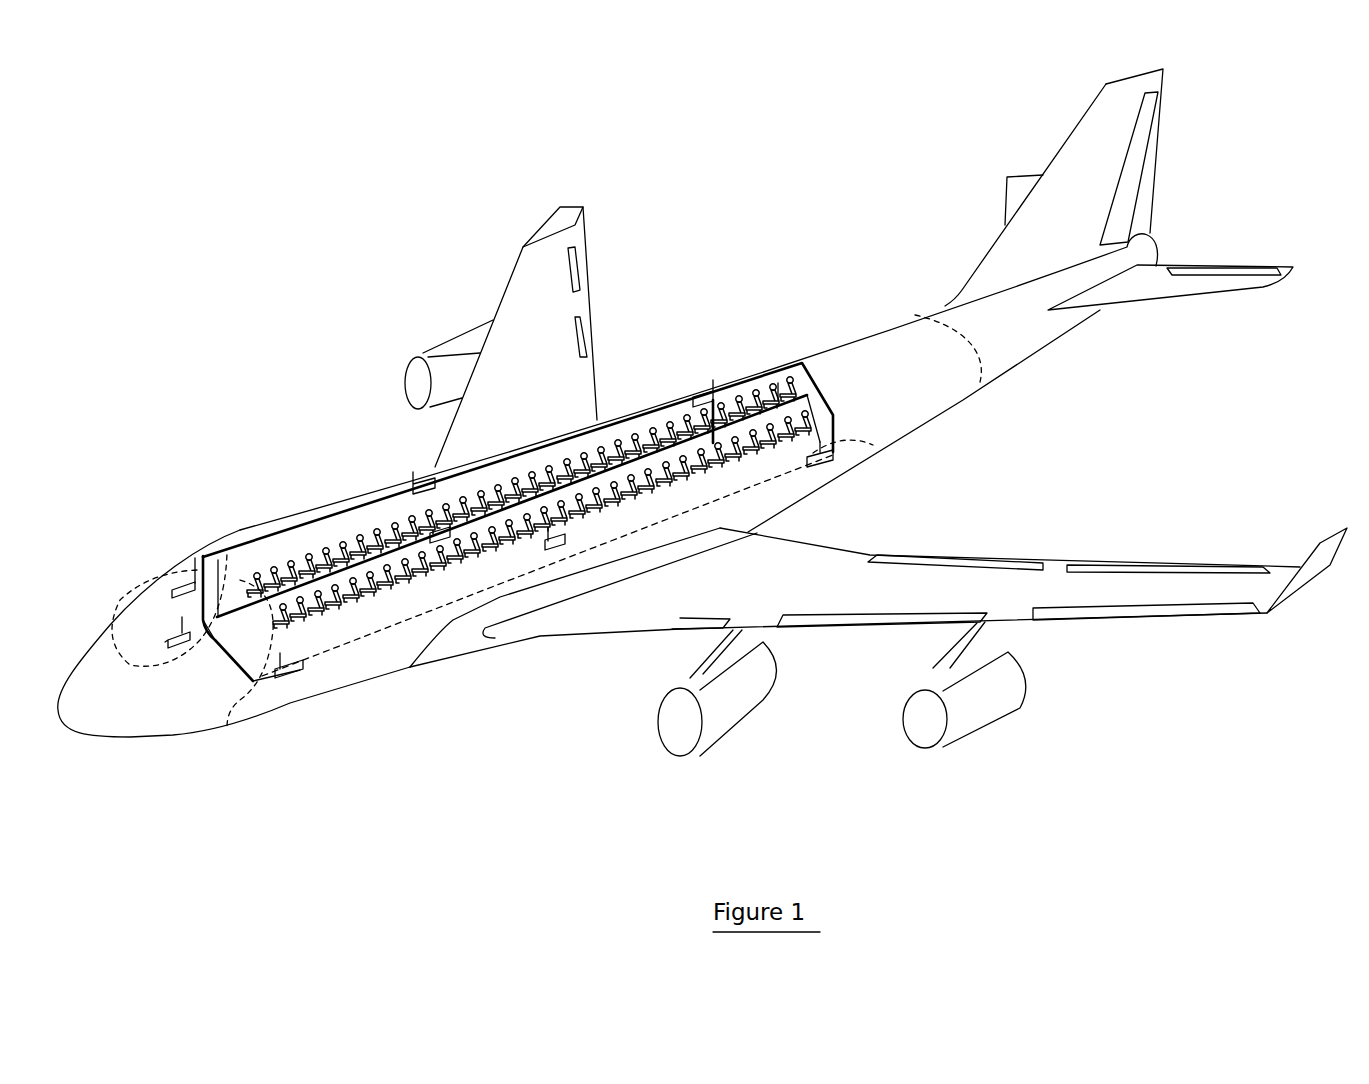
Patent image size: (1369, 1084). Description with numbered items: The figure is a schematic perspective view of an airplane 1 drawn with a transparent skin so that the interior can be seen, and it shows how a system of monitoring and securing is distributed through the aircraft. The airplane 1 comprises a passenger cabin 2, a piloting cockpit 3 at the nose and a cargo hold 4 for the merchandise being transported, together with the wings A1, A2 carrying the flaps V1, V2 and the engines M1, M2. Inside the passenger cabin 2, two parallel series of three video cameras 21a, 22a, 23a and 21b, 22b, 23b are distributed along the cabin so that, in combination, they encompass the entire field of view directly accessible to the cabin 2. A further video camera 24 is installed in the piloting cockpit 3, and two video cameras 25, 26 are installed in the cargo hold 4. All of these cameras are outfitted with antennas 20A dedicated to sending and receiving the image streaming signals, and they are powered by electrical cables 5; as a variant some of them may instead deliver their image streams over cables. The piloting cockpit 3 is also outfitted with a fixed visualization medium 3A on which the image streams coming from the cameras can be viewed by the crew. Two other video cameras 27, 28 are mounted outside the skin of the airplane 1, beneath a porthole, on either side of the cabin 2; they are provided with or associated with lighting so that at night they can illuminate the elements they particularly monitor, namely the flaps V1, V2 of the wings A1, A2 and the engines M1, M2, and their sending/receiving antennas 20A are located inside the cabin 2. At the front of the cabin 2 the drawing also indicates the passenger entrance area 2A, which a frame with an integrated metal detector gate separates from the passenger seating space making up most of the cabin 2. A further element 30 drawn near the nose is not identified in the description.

The airplane 1 is at (757, 273).
The passenger cabin 2 is at (835, 371).
The passenger entrance area 2A is at (250, 652).
The piloting cockpit 3 is at (133, 623).
The fixed visualization medium 3A is at (177, 650).
The cargo hold 4 is at (407, 645).
The electrical cables 5 is at (645, 423).
The antennas 20A is at (203, 557).
The video camera 21a is at (203, 560).
The video camera 21b is at (237, 580).
The video camera 22a is at (413, 488).
The video camera 22b is at (415, 530).
The video camera 23a is at (720, 395).
The video camera 23b is at (777, 395).
The video camera 24 is at (178, 585).
The video camera 25 is at (299, 676).
The video camera 26 is at (813, 467).
The video camera 27 is at (553, 550).
The video camera 28 is at (497, 460).
The stair / passage 30 is at (205, 640).
The wing A1 is at (1043, 580).
The wing A2 is at (527, 292).
The flaps V1 is at (912, 557).
The flaps V2 is at (577, 273).
The engine M1 is at (717, 700).
The engine M2 is at (425, 350).